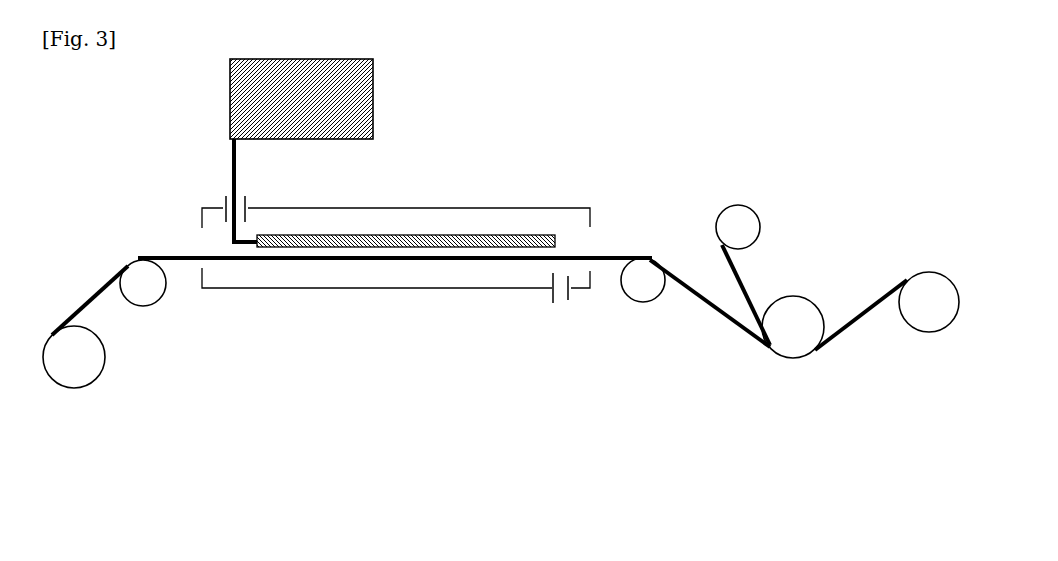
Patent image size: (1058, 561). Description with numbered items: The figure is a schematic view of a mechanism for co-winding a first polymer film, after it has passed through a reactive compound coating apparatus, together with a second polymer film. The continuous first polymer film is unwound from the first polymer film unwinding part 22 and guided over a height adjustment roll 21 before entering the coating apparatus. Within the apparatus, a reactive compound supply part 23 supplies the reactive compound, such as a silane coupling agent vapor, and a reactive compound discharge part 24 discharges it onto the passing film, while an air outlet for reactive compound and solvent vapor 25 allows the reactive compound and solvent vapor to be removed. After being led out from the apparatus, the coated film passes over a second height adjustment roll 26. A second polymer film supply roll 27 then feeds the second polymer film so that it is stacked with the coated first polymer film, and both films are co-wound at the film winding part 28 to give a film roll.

The height adjustment roll 21 is at (147, 277).
The first polymer film unwinding part 22 is at (62, 368).
The reactive compound supply part 23 is at (363, 92).
The reactive compound discharge part 24 is at (462, 246).
The air outlet for reactive compound and solvent vapor 25 is at (565, 282).
The height adjustment roll 26 is at (652, 264).
The second polymer film supply roll 27 is at (741, 221).
The film winding part 28 is at (938, 302).